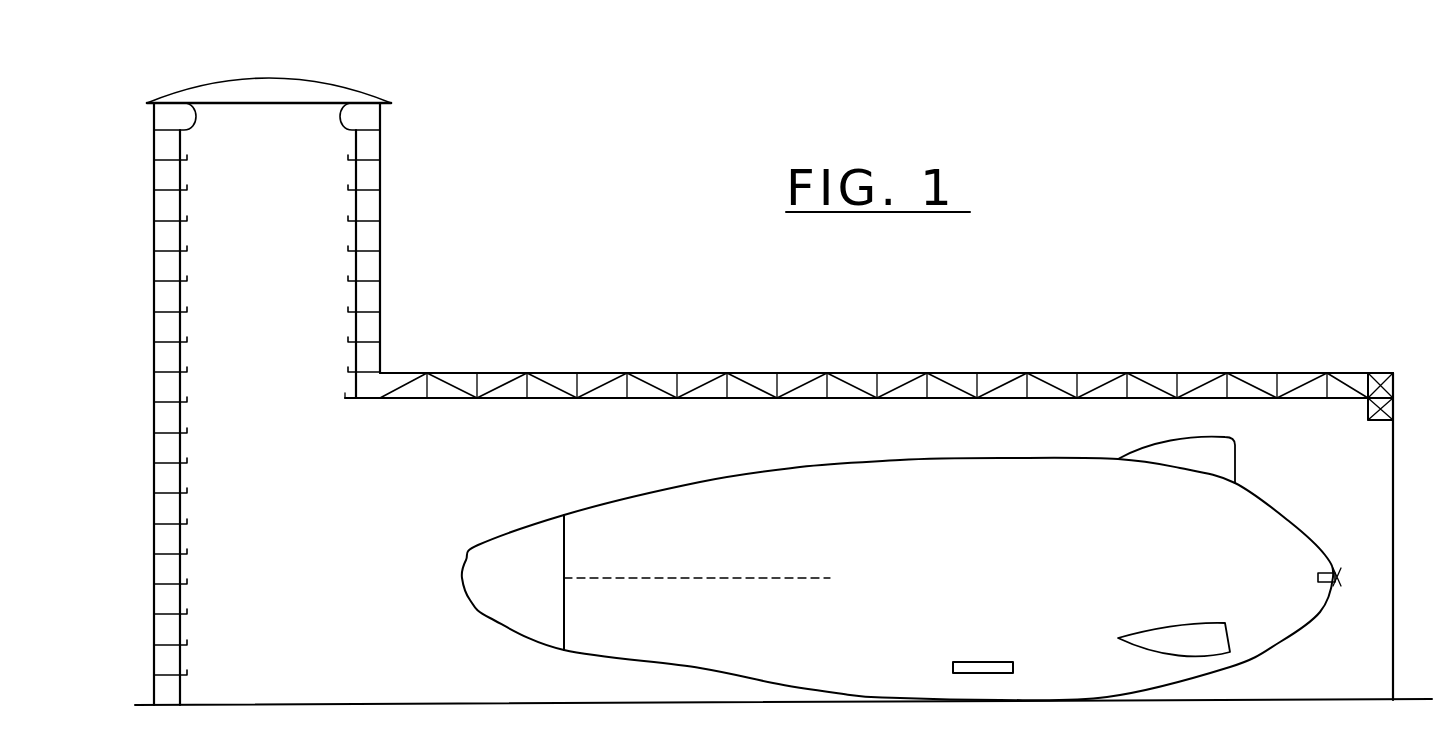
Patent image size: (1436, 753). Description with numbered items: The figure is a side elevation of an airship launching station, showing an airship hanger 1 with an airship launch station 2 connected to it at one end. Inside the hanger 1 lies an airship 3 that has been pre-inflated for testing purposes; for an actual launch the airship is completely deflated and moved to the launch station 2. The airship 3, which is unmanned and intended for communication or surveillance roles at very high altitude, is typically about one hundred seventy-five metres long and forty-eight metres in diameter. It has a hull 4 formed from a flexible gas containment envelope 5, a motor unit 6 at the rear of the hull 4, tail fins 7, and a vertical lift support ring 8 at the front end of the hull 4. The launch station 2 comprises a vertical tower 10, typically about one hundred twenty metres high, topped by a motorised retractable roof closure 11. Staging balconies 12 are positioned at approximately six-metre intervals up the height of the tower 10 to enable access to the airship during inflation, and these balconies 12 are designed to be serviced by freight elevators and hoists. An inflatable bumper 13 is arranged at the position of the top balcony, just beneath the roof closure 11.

The airship hanger 1 is at (920, 343).
The airship launch station 2 is at (319, 372).
The airship 3 is at (713, 462).
The hull 4 is at (932, 472).
The flexible gas containment envelope 5 is at (1012, 579).
The motor unit 6 is at (1338, 550).
The tail fins 7 is at (1236, 457).
The vertical lift support ring 8 is at (565, 517).
The vertical tower 10 is at (318, 292).
The motorised retractable roof closure 11 is at (325, 90).
The staging balconies 12 is at (335, 366).
The inflatable bumper 13 is at (375, 118).